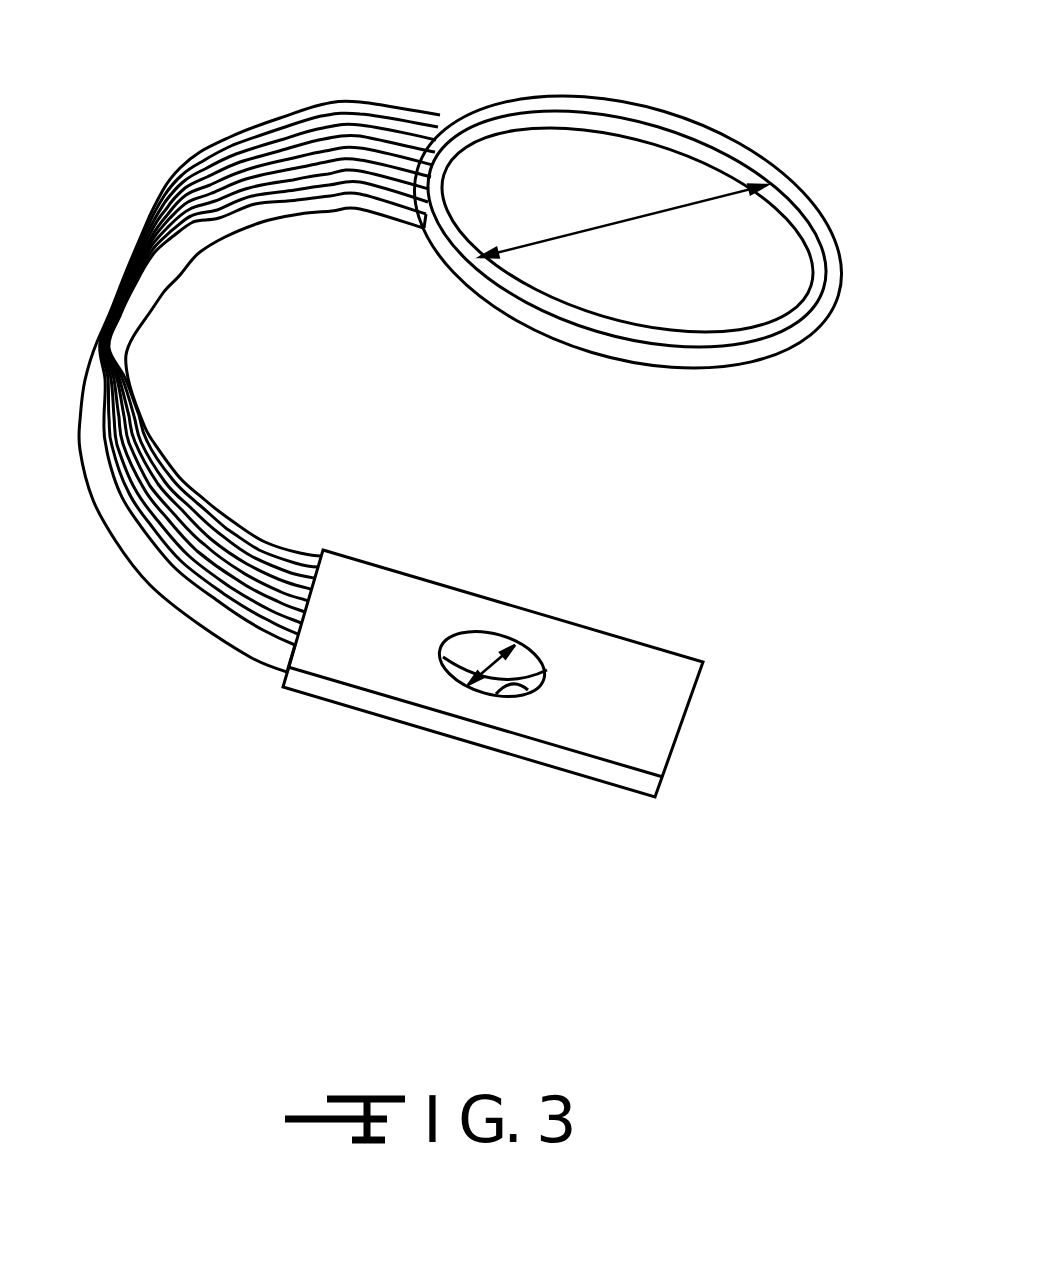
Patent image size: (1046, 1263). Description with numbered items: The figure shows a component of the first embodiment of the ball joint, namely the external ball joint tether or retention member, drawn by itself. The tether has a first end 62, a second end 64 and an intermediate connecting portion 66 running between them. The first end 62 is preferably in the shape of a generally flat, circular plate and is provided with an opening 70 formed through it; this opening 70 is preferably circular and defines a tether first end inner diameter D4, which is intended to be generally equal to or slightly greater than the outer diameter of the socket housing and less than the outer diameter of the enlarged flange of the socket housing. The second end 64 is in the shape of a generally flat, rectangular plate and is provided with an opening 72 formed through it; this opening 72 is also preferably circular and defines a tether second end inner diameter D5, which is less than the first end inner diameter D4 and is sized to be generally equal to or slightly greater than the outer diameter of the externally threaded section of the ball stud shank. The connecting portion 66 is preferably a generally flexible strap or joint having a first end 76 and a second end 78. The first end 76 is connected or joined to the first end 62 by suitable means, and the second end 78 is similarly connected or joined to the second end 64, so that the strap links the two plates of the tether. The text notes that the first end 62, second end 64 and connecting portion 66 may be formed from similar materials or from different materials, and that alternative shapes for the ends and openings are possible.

The first end 62 is at (838, 283).
The second end 64 is at (680, 738).
The connecting portion 66 is at (160, 292).
The opening 70 is at (592, 317).
The opening 72 is at (523, 688).
The first end 76 is at (428, 116).
The second end 78 is at (282, 670).
The tether first end inner diameter D4 is at (628, 218).
The tether second end inner diameter D5 is at (548, 667).